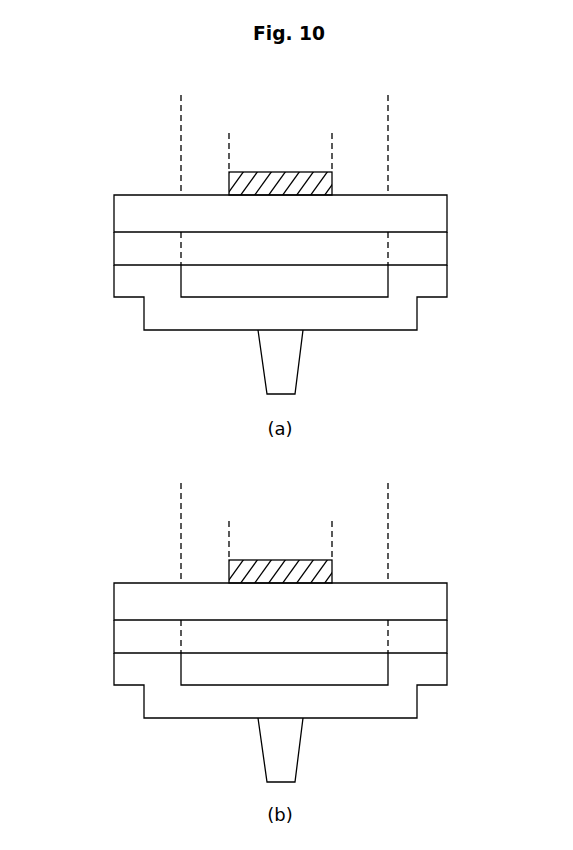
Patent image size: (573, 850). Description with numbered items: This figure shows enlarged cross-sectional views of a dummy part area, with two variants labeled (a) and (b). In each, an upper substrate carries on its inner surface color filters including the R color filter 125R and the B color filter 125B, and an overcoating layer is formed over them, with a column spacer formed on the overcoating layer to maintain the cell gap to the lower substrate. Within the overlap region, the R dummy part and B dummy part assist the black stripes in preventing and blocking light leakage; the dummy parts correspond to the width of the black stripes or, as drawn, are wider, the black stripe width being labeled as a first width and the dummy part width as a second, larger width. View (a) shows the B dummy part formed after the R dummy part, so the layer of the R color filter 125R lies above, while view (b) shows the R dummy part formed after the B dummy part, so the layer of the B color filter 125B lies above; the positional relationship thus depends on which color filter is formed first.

The R color filter 125R is at (440, 248).
The B color filter 125B is at (440, 636).